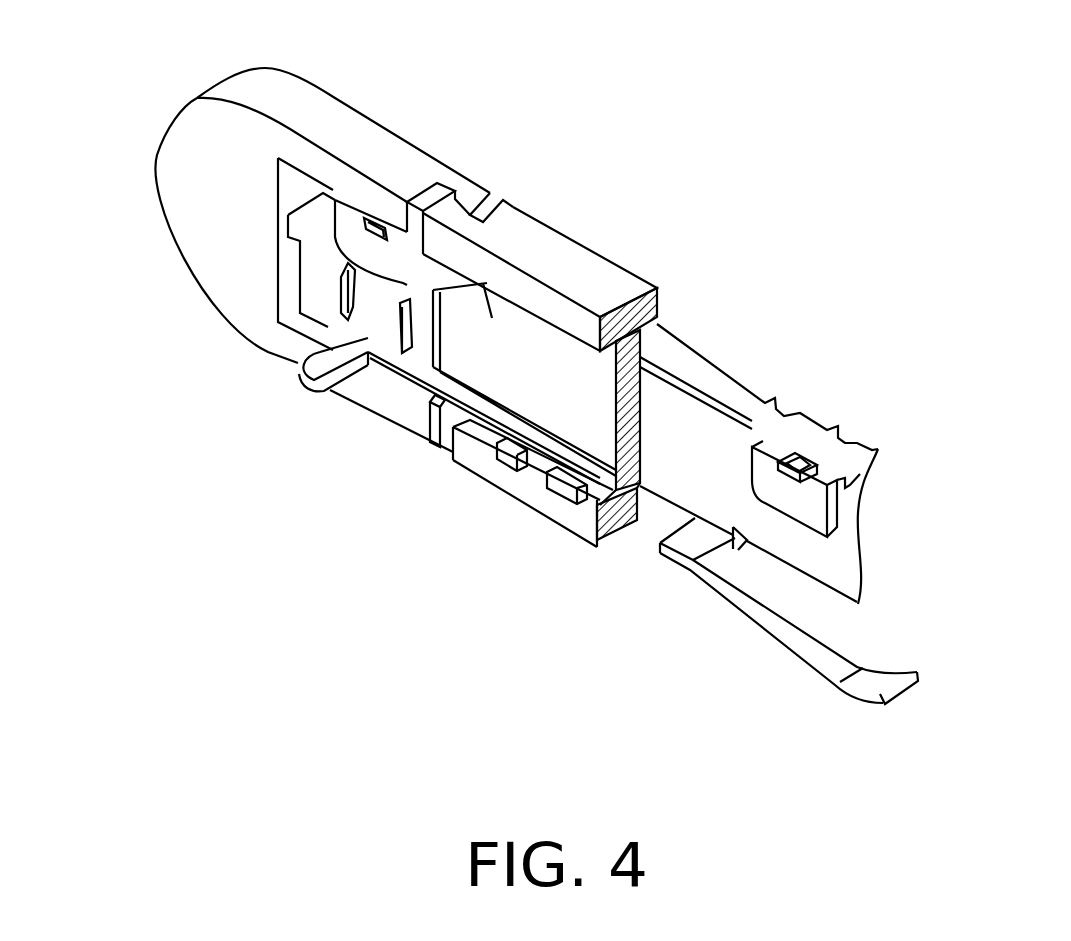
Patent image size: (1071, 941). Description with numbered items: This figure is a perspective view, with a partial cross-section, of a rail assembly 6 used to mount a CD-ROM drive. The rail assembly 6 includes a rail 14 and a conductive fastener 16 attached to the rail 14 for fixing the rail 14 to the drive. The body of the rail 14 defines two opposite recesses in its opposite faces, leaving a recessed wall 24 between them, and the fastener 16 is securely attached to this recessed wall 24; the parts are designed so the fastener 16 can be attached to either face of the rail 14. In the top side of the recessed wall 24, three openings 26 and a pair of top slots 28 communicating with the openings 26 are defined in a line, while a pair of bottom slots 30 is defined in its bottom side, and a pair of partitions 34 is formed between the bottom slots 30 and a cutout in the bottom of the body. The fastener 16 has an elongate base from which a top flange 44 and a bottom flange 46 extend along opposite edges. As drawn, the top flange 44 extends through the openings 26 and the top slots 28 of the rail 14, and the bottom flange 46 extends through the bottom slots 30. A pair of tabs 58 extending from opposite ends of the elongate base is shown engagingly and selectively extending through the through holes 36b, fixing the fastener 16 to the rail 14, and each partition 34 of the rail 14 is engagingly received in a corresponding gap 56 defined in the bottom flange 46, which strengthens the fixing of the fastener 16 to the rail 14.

The rail assembly 6 is at (688, 52).
The rail 14 is at (195, 214).
The conductive fastener 16 is at (679, 338).
The recessed wall 24 is at (318, 276).
The openings 26 is at (311, 190).
The top slots 28 is at (617, 317).
The bottom slots 30 is at (483, 440).
The partitions 34 is at (623, 533).
The through holes 36b is at (358, 268).
The top flange 44 is at (740, 398).
The bottom flange 46 is at (657, 522).
The gaps 56 is at (593, 500).
The tabs 58 is at (345, 298).